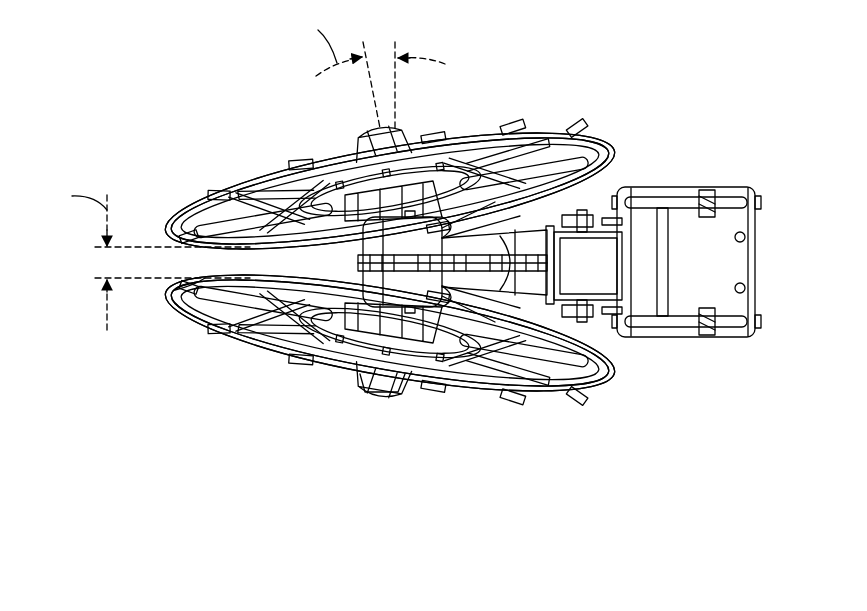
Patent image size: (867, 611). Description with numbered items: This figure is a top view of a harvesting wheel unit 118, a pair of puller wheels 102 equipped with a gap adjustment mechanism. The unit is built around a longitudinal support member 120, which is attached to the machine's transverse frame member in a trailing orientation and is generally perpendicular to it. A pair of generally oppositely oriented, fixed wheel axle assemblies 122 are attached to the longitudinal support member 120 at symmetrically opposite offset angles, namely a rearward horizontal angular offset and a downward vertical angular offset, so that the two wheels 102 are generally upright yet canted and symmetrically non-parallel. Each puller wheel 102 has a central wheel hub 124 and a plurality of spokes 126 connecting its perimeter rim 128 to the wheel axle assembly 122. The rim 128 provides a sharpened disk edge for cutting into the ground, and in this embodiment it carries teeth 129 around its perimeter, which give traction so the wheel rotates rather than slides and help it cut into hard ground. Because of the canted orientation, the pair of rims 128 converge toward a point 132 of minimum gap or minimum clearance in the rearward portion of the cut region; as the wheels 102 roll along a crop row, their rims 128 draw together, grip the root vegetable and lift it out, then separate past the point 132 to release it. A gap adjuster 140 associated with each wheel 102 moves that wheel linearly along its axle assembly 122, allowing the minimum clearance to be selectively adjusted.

The harvesting wheel unit 118 is at (203, 55).
The puller wheel 102 is at (417, 261).
The perimeter rim 128 is at (607, 160).
The spokes 126 is at (352, 280).
The gap adjuster 140 is at (352, 245).
The longitudinal support member 120 is at (503, 275).
The teeth 129 is at (172, 215).
The wheel axle assembly 122 is at (452, 230).
The central wheel hub 124 is at (366, 392).
The point of minimum gap 132 is at (228, 262).